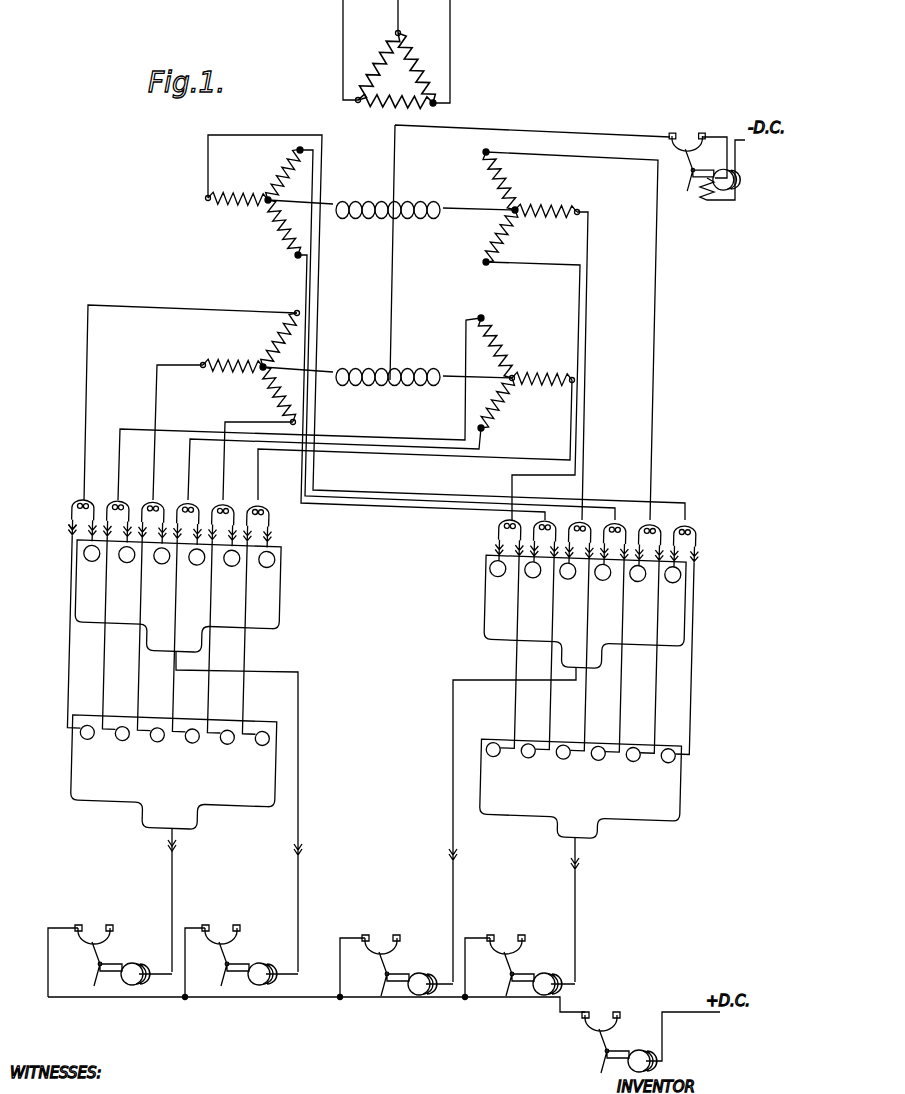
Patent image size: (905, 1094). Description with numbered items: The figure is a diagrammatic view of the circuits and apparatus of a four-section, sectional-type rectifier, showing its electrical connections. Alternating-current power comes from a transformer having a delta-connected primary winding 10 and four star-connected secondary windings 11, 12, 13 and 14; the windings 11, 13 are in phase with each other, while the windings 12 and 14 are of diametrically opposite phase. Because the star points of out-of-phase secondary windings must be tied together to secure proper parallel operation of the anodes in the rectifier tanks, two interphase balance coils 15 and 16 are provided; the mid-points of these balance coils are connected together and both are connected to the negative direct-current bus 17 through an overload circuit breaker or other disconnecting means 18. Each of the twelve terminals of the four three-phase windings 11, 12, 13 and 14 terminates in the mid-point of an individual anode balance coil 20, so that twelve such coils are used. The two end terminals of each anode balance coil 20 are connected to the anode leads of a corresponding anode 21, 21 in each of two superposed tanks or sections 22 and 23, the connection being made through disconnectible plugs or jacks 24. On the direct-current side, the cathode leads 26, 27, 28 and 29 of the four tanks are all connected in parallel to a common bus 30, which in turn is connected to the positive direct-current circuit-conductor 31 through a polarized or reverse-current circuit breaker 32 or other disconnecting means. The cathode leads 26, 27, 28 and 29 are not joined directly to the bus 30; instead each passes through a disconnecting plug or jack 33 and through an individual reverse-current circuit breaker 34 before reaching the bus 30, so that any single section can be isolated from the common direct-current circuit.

The delta-connected primary winding 10 is at (355, 60).
The star-connected secondary winding 11 is at (258, 190).
The star-connected secondary winding 12 is at (524, 198).
The star-connected secondary winding 13 is at (258, 352).
The star-connected secondary winding 14 is at (514, 366).
The interphase balance coil 15 is at (412, 218).
The interphase balance coil 16 is at (414, 370).
The negative direct-current bus 17 is at (750, 140).
The overload circuit breaker 18 is at (682, 140).
The anode balance coil 20 is at (78, 500).
The anode 21 is at (84, 556).
The tank 22 is at (78, 624).
The tank 23 is at (80, 805).
The disconnectible plug 24 is at (68, 519).
The cathode lead 26 is at (174, 832).
The cathode lead 27 is at (300, 828).
The cathode lead 28 is at (456, 840).
The cathode lead 29 is at (580, 858).
The common bus 30 is at (535, 1014).
The positive direct-current circuit-conductor 31 is at (700, 1014).
The reverse-current circuit breaker 32 is at (604, 1012).
The disconnecting plug 33 is at (176, 850).
The reverse-current circuit breaker 34 is at (90, 925).